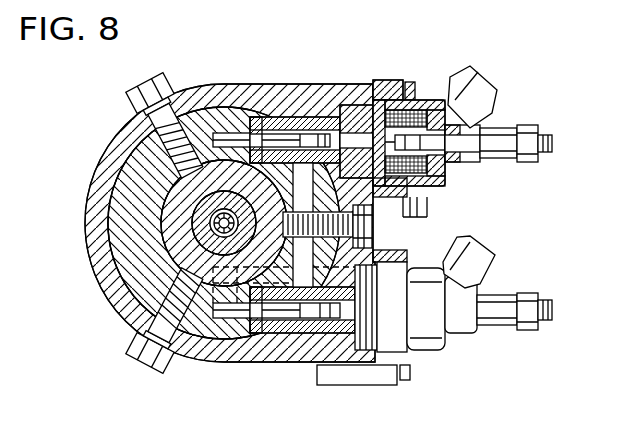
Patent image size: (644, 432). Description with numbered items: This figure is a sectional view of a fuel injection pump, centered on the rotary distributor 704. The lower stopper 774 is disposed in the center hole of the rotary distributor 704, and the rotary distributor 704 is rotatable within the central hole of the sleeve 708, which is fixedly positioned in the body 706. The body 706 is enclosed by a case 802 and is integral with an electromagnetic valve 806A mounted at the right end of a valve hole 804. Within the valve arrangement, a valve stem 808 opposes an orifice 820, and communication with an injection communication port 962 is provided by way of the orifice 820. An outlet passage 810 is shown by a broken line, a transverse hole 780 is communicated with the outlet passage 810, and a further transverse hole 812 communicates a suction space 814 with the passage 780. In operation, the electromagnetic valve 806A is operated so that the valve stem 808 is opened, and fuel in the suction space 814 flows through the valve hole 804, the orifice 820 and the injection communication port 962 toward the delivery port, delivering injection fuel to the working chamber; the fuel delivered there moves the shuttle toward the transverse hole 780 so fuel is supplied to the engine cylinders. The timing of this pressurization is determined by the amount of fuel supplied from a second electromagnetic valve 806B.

The rotary distributor 704 is at (112, 238).
The body 706 is at (135, 150).
The sleeve 708 is at (118, 212).
The lower stopper 774 is at (130, 192).
The transverse hole 780 is at (297, 328).
The case 802 is at (262, 82).
The valve hole 804 is at (338, 100).
The electromagnetic valve 806A is at (423, 100).
The electromagnetic valve 806B is at (433, 343).
The valve stem 808 is at (285, 138).
The outlet passage 810 is at (190, 352).
The transverse hole 812 is at (372, 231).
The suction space 814 is at (312, 117).
The orifice 820 is at (219, 128).
The injection communication port 962 is at (193, 88).